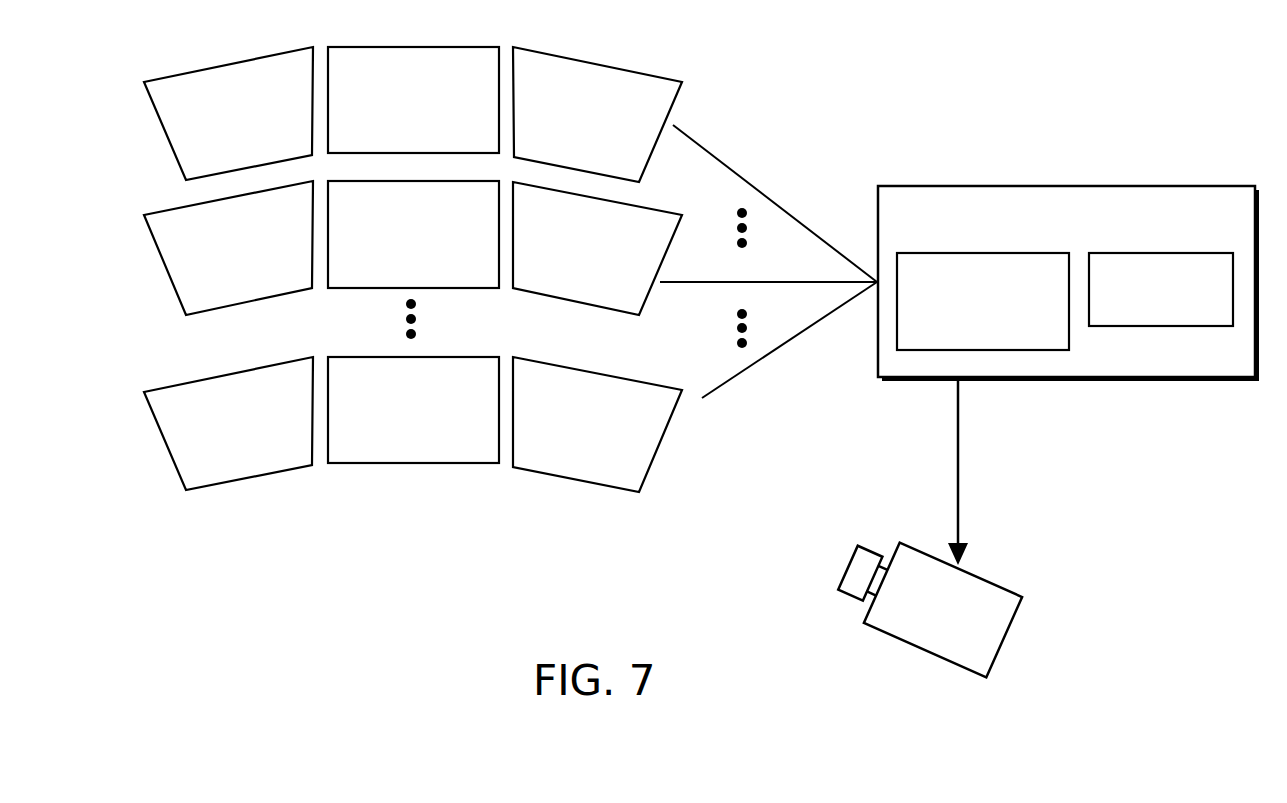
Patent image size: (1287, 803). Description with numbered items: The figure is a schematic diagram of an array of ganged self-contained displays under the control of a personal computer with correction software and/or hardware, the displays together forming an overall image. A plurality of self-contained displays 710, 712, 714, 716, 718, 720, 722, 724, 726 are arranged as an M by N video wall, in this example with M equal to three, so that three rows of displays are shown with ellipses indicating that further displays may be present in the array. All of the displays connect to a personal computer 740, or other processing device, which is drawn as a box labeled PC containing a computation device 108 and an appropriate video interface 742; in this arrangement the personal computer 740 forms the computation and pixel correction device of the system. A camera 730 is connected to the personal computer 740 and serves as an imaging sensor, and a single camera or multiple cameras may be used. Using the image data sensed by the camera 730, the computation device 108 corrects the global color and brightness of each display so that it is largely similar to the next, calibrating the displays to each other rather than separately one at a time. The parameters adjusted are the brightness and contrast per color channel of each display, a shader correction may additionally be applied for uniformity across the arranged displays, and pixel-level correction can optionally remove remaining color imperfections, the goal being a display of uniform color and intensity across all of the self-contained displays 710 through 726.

The self-contained display 710 is at (228, 113).
The self-contained display 712 is at (413, 100).
The self-contained display 714 is at (597, 114).
The self-contained display 716 is at (228, 248).
The self-contained display 718 is at (413, 234).
The self-contained display 720 is at (597, 248).
The self-contained display 722 is at (228, 423).
The self-contained display 724 is at (413, 410).
The self-contained display 726 is at (597, 424).
The personal computer 740 is at (1175, 176).
The computation device 108 is at (983, 301).
The video interface 742 is at (1161, 289).
The camera 730 is at (926, 603).